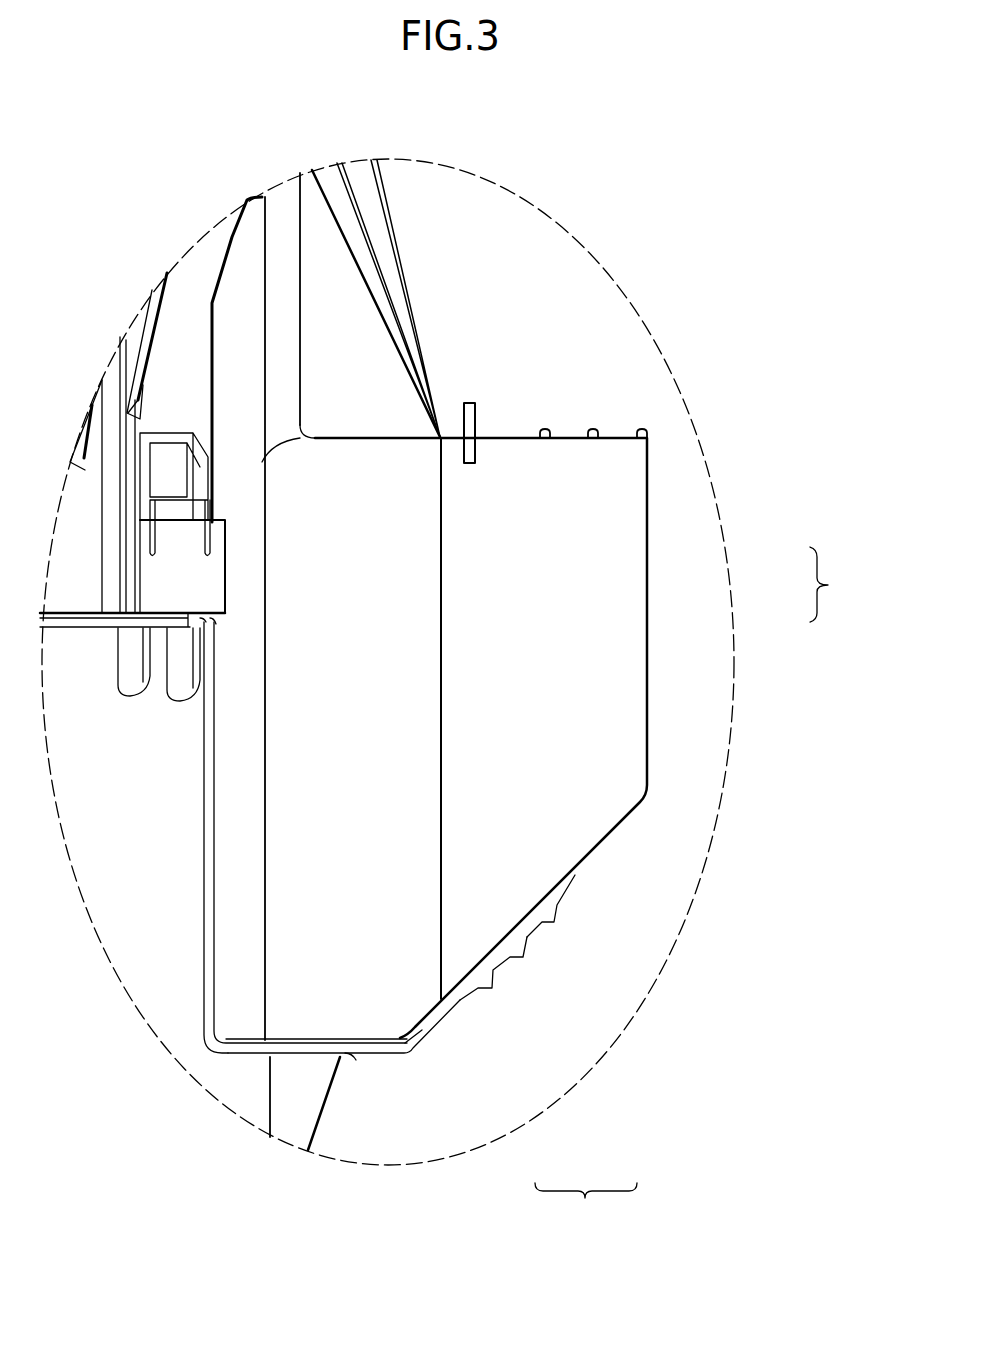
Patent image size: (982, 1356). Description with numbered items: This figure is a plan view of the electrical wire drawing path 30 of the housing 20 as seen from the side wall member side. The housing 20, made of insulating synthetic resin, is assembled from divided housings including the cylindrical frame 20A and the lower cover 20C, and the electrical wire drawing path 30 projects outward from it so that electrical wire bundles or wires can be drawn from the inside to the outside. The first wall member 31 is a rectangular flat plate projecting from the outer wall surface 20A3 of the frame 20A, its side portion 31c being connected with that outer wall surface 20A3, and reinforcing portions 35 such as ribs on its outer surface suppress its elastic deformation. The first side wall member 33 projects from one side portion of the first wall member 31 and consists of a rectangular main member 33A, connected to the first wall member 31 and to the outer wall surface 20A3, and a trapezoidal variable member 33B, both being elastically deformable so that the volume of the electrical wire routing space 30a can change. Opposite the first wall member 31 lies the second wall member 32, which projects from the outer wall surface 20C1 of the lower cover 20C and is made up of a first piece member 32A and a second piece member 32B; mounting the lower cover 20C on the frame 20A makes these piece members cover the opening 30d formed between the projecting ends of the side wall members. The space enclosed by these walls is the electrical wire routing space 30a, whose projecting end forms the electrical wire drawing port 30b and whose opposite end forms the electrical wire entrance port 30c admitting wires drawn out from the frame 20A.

The housing 20 is at (269, 657).
The frame 20A is at (183, 284).
The outer wall surface of the frame 20A3 is at (255, 314).
The lower cover 20C is at (216, 1076).
The outer wall surface of the lower cover 20C1 is at (103, 882).
The electrical wire drawing path 30 is at (657, 471).
The electrical wire routing space 30a is at (507, 758).
The electrical wire drawing port 30b is at (640, 524).
The electrical wire entrance port 30c is at (255, 805).
The opening 30d is at (515, 919).
The first wall member 31 is at (507, 437).
The side portion of the first wall member 31c is at (307, 433).
The second wall member 32 is at (586, 1205).
The first piece member 32A is at (371, 1055).
The second piece member 32B is at (502, 962).
The first side wall member 33 is at (834, 584).
The main member 33A is at (370, 620).
The variable member 33B is at (562, 637).
The reinforcing portions 35 is at (303, 208).